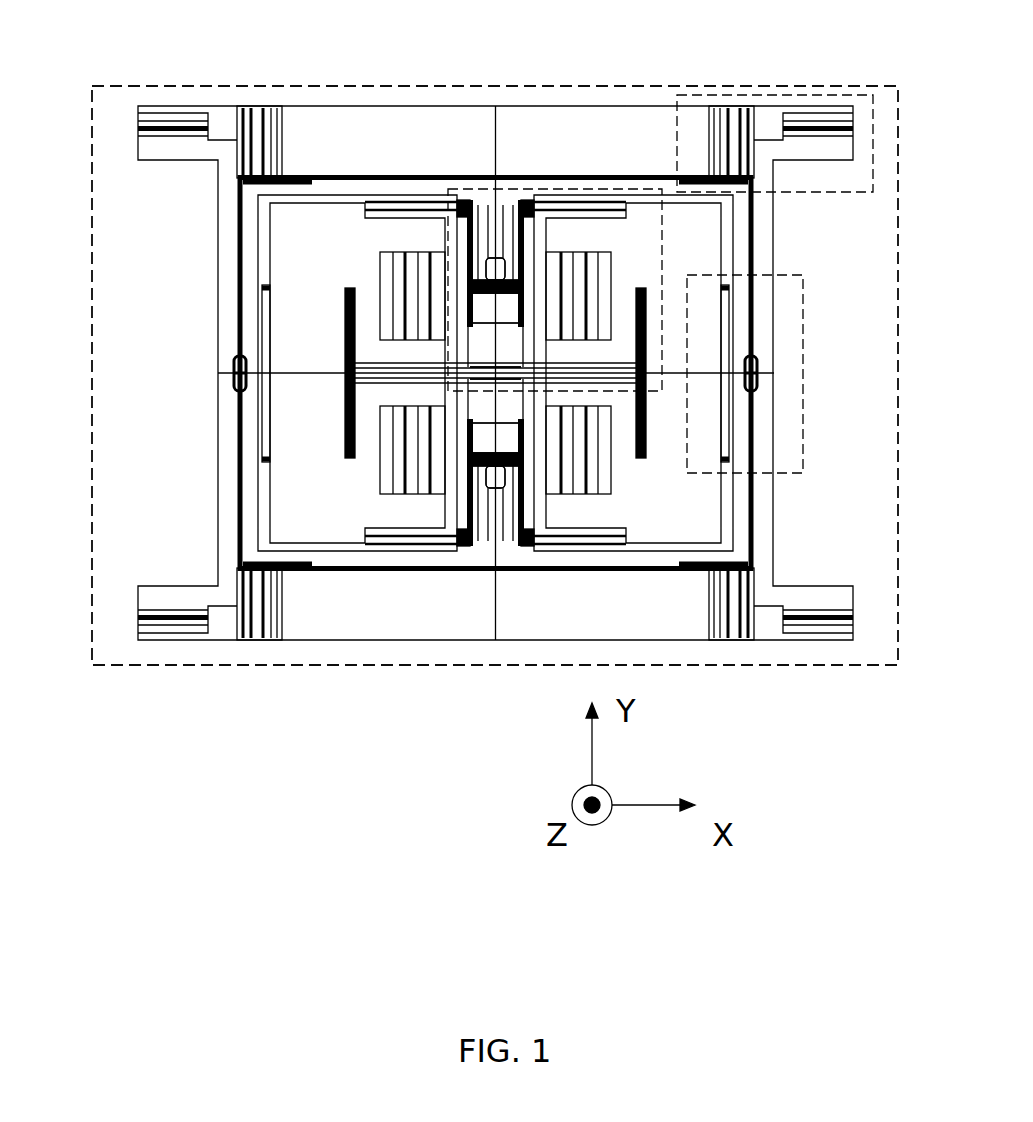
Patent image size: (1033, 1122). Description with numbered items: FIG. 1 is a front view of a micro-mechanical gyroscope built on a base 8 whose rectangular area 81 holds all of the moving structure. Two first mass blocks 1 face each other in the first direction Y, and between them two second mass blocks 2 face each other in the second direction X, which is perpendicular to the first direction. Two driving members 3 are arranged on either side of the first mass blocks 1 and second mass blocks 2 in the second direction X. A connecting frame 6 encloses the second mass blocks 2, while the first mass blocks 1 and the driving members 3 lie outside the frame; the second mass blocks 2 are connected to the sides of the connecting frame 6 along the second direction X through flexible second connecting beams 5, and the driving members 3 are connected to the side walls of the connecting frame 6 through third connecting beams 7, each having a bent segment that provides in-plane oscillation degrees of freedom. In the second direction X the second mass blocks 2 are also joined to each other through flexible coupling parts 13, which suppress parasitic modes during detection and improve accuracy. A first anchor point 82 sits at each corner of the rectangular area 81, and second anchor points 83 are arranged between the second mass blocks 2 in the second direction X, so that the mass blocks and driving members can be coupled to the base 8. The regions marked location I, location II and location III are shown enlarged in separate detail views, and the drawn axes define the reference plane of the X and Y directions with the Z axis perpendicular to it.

The first mass block 1 is at (375, 128).
The second mass block 2 is at (316, 247).
The driving member 3 is at (228, 433).
The second connecting beam 5 is at (255, 305).
The connecting frame 6 is at (248, 403).
The third connecting beam 7 is at (748, 368).
The base 8 is at (188, 497).
The coupling part 13 is at (565, 372).
The rectangular area 81 is at (100, 90).
The first anchor point 82 is at (222, 125).
The second anchor point 83 is at (520, 225).
The location I is at (805, 276).
The location II is at (873, 96).
The location III is at (443, 223).